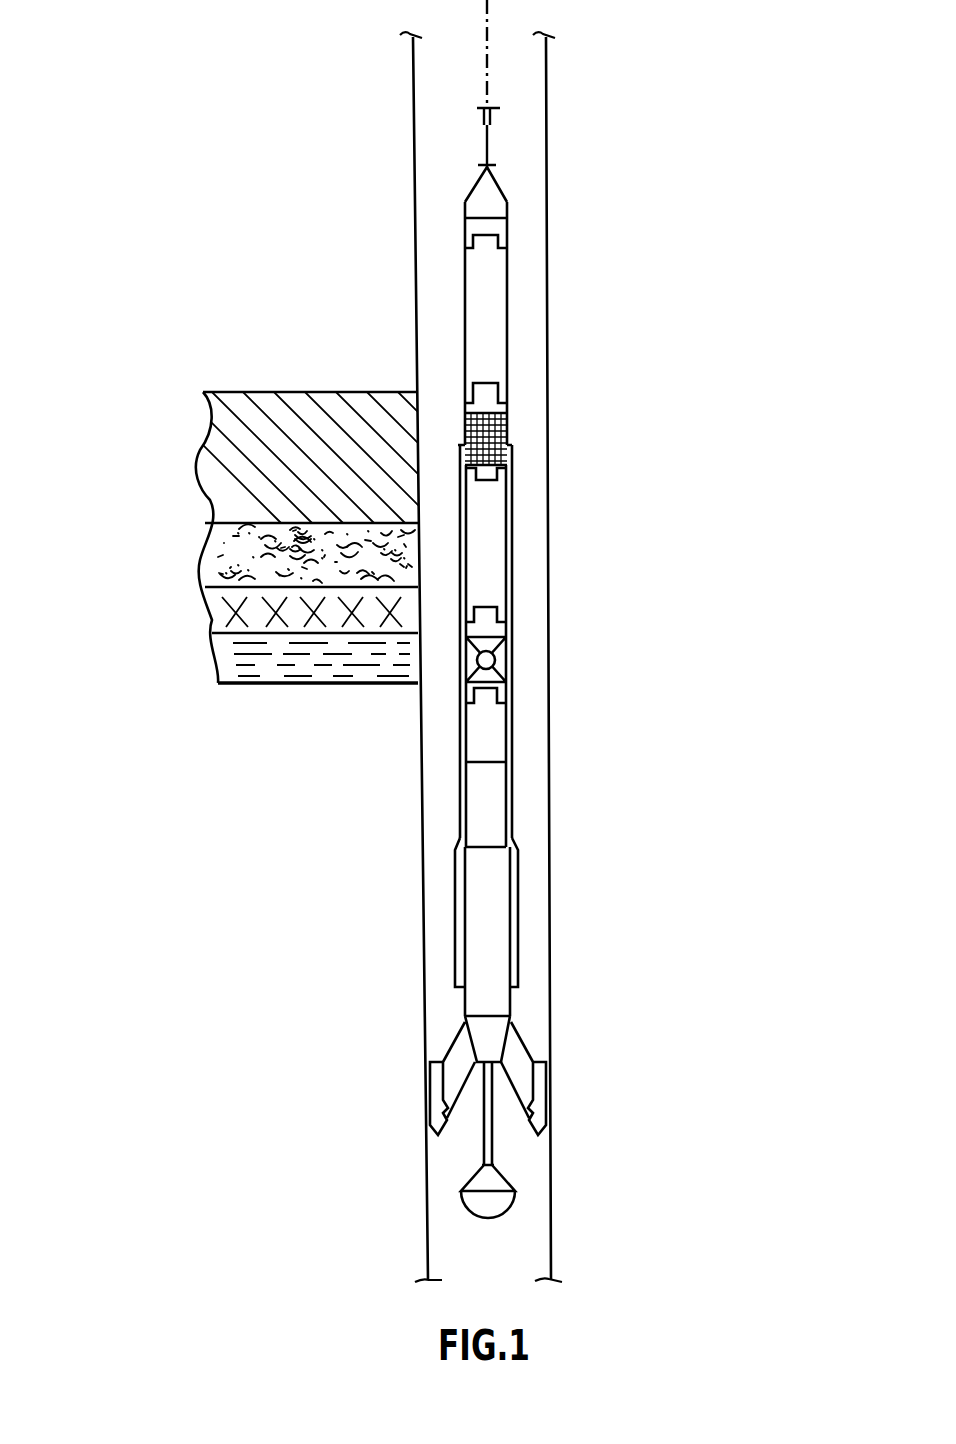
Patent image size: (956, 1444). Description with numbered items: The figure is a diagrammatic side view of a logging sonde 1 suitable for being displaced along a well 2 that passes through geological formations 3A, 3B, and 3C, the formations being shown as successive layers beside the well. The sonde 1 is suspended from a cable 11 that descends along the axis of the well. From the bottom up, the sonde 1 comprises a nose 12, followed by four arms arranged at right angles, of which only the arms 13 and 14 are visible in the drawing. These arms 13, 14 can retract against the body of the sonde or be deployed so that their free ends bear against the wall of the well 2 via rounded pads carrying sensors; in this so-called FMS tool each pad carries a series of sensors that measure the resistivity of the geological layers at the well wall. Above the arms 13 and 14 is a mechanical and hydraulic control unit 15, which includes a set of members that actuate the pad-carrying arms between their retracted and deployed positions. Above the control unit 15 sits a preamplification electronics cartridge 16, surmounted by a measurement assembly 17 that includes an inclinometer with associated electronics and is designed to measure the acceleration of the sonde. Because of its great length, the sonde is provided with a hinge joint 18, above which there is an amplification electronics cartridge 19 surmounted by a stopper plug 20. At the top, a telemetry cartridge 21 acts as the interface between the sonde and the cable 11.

The logging sonde 1 is at (511, 692).
The well 2 is at (422, 331).
The geological formation 3A is at (215, 455).
The geological formation 3B is at (208, 540).
The geological formation 3C is at (225, 610).
The cable 11 is at (486, 140).
The nose 12 is at (497, 1201).
The arm 13 is at (517, 1048).
The arm 14 is at (455, 1052).
The mechanical and hydraulic control unit 15 is at (489, 918).
The preamplification electronics cartridge 16 is at (489, 806).
The measurement assembly 17 is at (489, 722).
The hinge joint 18 is at (495, 660).
The amplification electronics cartridge 19 is at (483, 540).
The stopper plug 20 is at (507, 431).
The telemetry cartridge 21 is at (489, 309).